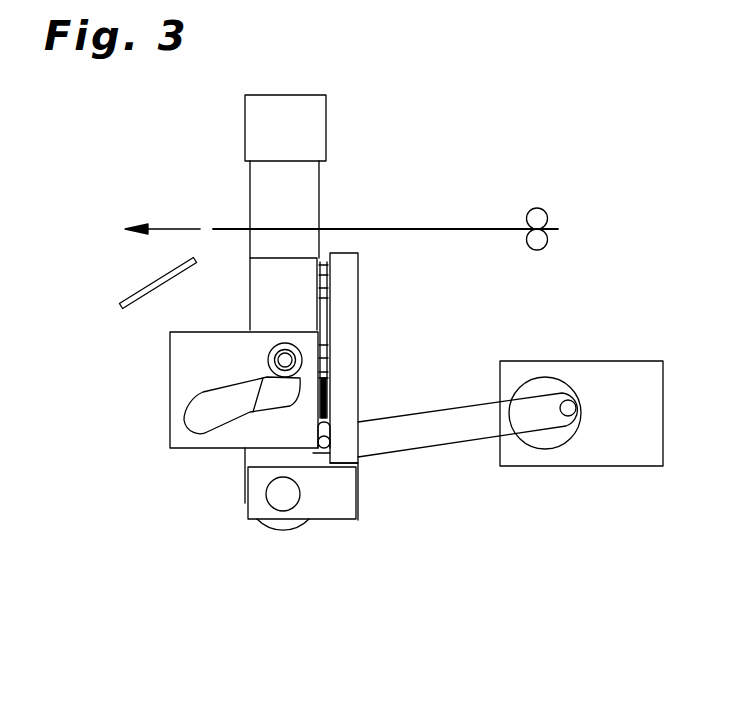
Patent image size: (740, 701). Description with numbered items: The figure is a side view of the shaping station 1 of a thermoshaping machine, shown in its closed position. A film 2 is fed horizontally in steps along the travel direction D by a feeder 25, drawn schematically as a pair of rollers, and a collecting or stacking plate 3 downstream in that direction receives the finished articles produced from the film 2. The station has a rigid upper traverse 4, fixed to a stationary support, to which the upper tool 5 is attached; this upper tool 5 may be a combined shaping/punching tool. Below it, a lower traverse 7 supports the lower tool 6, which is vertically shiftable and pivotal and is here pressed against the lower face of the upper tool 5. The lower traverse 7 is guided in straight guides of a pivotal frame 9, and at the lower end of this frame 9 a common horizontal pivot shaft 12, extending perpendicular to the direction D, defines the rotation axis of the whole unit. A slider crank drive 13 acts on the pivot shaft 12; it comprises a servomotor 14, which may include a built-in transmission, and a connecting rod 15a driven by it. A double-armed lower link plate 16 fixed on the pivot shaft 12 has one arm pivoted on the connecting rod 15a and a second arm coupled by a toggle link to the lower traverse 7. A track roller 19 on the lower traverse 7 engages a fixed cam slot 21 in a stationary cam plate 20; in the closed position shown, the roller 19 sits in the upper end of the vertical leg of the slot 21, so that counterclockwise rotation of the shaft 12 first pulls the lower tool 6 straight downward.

The shaping station 1 is at (155, 143).
The film 2 is at (478, 229).
The stacking plate 3 is at (141, 287).
The upper traverse 4 is at (253, 117).
The upper tool 5 is at (267, 200).
The lower tool 6 is at (305, 243).
The lower traverse 7 is at (273, 293).
The pivotal frame 9 is at (340, 327).
The pivot shaft 12 is at (279, 496).
The slider crank drive 13 is at (532, 344).
The servomotor 14 is at (627, 372).
The connecting rod 15a is at (445, 430).
The lower link plate 16 is at (310, 457).
The track roller 19 is at (268, 367).
The cam plate 20 is at (182, 374).
The cam slot 21 is at (198, 432).
The feeder 25 is at (552, 210).
The travel direction D is at (180, 228).